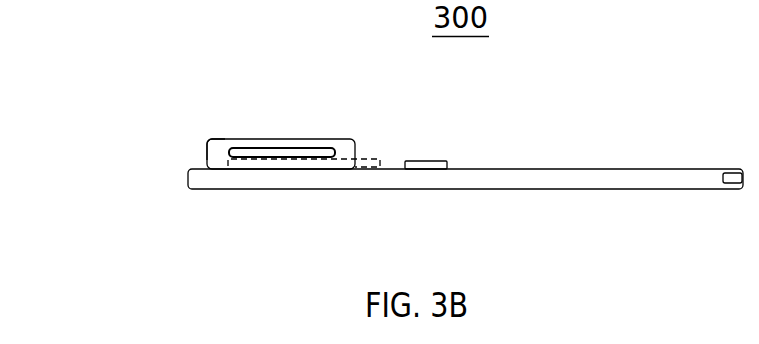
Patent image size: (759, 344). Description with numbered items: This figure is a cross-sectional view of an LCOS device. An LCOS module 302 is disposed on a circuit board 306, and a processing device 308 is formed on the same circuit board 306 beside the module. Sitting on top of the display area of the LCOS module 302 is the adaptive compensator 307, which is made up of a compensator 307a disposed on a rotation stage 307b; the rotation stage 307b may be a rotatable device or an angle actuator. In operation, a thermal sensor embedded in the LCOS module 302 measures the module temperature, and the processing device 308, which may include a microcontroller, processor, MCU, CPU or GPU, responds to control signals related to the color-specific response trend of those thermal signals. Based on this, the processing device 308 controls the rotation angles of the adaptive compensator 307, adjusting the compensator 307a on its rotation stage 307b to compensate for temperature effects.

The LCOS module 302 is at (381, 156).
The circuit board 306 is at (637, 171).
The adaptive compensator 307 is at (247, 137).
The compensator 307a is at (318, 147).
The rotation stage 307b is at (217, 148).
The processing device 308 is at (450, 163).